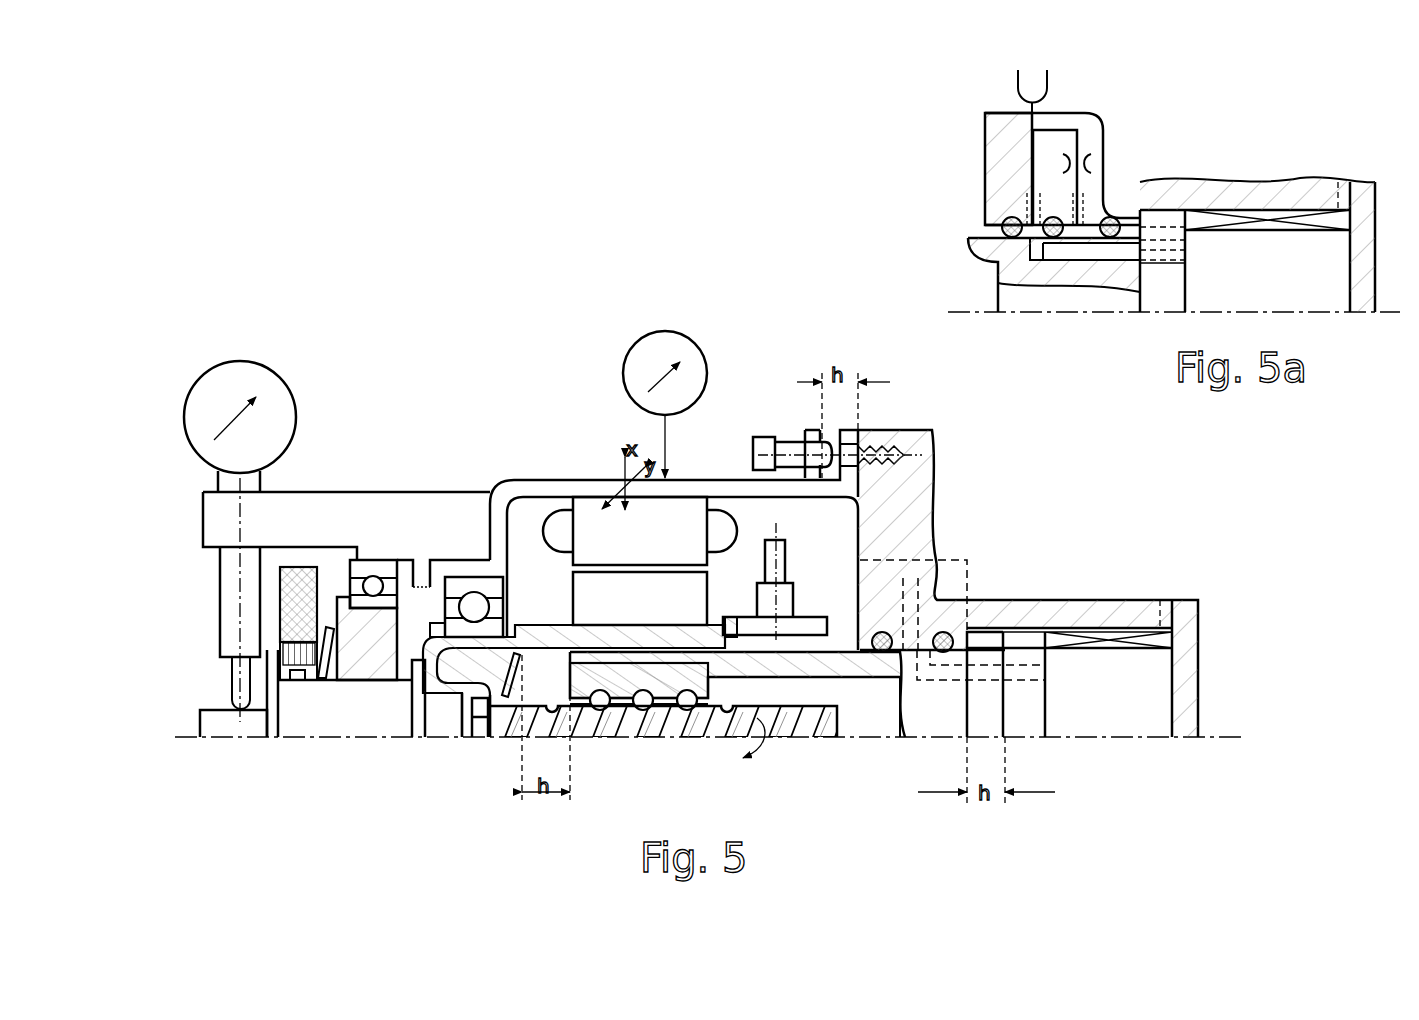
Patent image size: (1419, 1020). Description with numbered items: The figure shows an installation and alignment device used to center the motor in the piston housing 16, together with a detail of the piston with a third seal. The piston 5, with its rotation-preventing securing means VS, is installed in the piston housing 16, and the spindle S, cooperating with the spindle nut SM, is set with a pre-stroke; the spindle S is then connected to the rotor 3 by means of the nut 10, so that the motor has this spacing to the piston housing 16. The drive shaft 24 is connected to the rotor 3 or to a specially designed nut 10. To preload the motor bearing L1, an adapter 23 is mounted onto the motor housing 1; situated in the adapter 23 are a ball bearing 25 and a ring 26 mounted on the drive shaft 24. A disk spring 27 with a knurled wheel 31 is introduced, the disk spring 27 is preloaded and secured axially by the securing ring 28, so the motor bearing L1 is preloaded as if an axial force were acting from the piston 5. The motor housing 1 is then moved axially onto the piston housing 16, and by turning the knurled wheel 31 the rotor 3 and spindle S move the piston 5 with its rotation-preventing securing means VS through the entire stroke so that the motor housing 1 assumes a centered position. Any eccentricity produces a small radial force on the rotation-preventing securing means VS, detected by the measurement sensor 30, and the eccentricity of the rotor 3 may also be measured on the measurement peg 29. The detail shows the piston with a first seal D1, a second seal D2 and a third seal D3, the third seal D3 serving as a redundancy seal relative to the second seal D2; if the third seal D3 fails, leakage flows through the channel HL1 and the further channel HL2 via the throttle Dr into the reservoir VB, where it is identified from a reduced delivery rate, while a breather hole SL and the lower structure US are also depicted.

In FIG. 5, the motor housing 1 is at (548, 494).
In FIG. 5, the rotor 3 is at (458, 705).
In FIG. 5, the piston 5 is at (927, 722).
In FIG. 5, the nut 10 is at (480, 724).
In FIG. 5, the piston housing 16 is at (912, 507).
In FIG. 5, the adapter 23 is at (357, 508).
In FIG. 5, the drive shaft 24 is at (433, 732).
In FIG. 5, the ball bearing 25 is at (384, 583).
In FIG. 5, the ring 26 is at (373, 674).
In FIG. 5, the disk spring 27 is at (327, 682).
In FIG. 5, the securing ring 28 is at (275, 724).
In FIG. 5, the measurement peg 29 is at (228, 732).
In FIG. 5, the measurement sensor 30 is at (243, 372).
In FIG. 5, the knurled wheel 31 is at (297, 568).
In FIG. 5, the motor bearing L1 is at (457, 592).
In FIG. 5, the spindle S is at (620, 722).
In FIG. 5, the spindle nut SM is at (670, 692).
In FIG. 5, the rotation-preventing securing means VS is at (1025, 645).
In FIG. 5A, the channel HL1 is at (1032, 152).
In FIG. 5A, the further channel with throttle HL2 is at (1078, 130).
In FIG. 5A, the reservoir VB is at (1043, 93).
In FIG. 5A, the throttle Dr is at (1093, 165).
In FIG. 5A, the seal 1 D1 is at (1008, 218).
In FIG. 5A, the seal 2 D2 is at (1050, 218).
In FIG. 5A, the seal 3 D3 is at (1112, 217).
In FIG. 5A, the lower slide US is at (1228, 215).
In FIG. 5A, the breather hole SL is at (1037, 262).